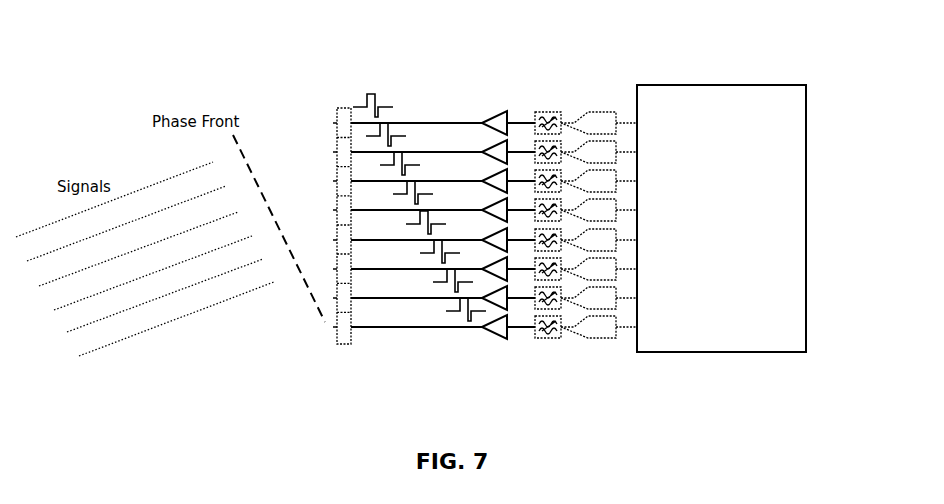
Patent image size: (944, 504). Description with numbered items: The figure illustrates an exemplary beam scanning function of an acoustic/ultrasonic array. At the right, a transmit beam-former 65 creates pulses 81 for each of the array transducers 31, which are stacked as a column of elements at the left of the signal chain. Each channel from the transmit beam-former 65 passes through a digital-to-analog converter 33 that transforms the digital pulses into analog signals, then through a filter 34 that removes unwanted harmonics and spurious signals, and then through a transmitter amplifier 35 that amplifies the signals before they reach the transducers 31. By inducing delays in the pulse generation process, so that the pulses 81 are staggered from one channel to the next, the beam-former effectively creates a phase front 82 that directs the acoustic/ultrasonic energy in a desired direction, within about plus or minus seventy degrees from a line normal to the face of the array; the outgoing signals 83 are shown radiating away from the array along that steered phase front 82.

The ultrasonic transducer 31 is at (335, 115).
The digital-to-analog converter 33 is at (595, 117).
The filter 34 is at (545, 107).
The transmitter amplifier 35 is at (497, 117).
The transmit beam-former 65 is at (713, 106).
The pulses 81 is at (378, 98).
The phase front 82 is at (250, 162).
The signals 83 is at (198, 311).